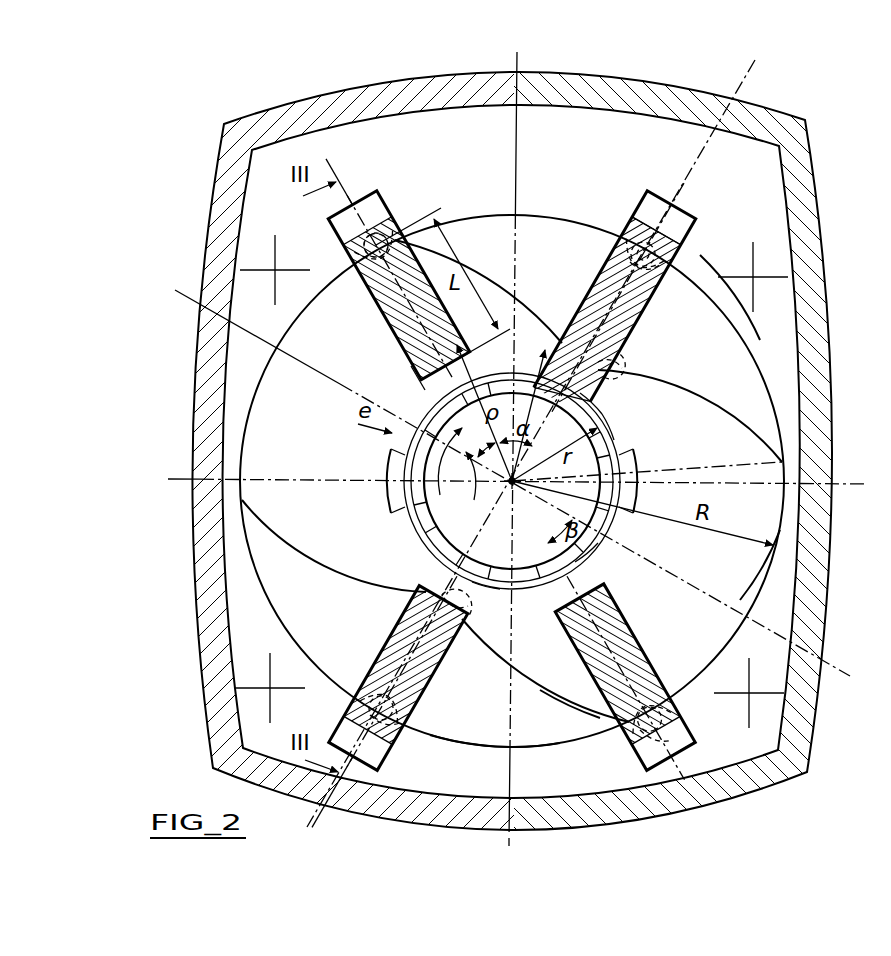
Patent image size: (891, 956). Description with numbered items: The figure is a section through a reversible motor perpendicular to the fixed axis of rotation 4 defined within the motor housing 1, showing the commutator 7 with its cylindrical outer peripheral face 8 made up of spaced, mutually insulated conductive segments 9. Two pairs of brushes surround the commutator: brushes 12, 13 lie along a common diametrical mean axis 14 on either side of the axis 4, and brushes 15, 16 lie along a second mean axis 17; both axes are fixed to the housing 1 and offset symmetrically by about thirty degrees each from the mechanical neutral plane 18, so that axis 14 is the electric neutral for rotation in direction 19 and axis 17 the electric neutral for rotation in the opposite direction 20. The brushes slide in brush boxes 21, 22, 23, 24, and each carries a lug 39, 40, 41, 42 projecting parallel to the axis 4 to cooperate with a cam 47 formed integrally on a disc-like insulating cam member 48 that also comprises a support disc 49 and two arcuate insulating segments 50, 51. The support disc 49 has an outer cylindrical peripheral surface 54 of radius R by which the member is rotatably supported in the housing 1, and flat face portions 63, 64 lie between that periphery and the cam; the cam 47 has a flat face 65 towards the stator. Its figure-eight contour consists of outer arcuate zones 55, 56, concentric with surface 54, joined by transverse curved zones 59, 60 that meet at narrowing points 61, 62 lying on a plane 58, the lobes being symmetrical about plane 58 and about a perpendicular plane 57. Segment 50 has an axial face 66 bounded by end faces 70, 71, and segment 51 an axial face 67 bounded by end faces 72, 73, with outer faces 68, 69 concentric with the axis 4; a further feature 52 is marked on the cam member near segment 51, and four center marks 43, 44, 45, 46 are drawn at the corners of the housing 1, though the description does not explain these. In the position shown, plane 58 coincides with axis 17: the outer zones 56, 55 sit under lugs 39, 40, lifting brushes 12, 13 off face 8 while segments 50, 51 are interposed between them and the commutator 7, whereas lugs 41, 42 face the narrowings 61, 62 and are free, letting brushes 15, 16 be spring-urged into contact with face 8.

The motor housing 1 is at (260, 98).
The axis of rotation 4 is at (505, 504).
The commutator 7 is at (612, 438).
The outer peripheral face 8 is at (600, 410).
The conductive segments 9 is at (618, 446).
The brush 12 is at (392, 352).
The brush 13 is at (628, 660).
The mean axis 14 is at (626, 614).
The brush 15 is at (626, 352).
The brush 16 is at (420, 668).
The mean axis 17 is at (655, 248).
The mechanical neutral plane 18 is at (516, 62).
The direction of rotation 19 is at (445, 474).
The direction of rotation 20 is at (478, 485).
The brush box 21 is at (404, 370).
The brush box 22 is at (692, 722).
The brush box 23 is at (634, 204).
The brush box 24 is at (365, 661).
The lug 39 is at (385, 234).
The lug 40 is at (672, 740).
The lug 41 is at (665, 262).
The lug 42 is at (402, 722).
The center mark 43 is at (275, 268).
The center mark 44 is at (270, 686).
The center mark 45 is at (753, 272).
The center mark 46 is at (749, 690).
The cam 47 is at (565, 697).
The cam member 48 is at (537, 752).
The support disc 49 is at (494, 750).
The insulating segment 50 is at (383, 480).
The insulating segment 51 is at (612, 560).
The ring slot 52 is at (496, 574).
The outer cylindrical peripheral surface 54 is at (735, 328).
The outer arcuate zone 55 is at (767, 584).
The outer arcuate zone 56 is at (290, 330).
The plane 57 is at (845, 665).
The plane 58 is at (745, 92).
The transverse curved zone 59 is at (497, 284).
The transverse curved zone 60 is at (498, 668).
The narrowing point 61 is at (620, 372).
The narrowing point 62 is at (466, 622).
The flat face portion 63 is at (742, 385).
The flat face portion 64 is at (460, 748).
The flat face 65 is at (312, 558).
The axial face 66 is at (418, 405).
The axial face 67 is at (641, 497).
The outer face 68 is at (386, 453).
The outer face 69 is at (640, 522).
The end face 70 is at (458, 368).
The end face 71 is at (392, 495).
The end face 72 is at (556, 592).
The end face 73 is at (652, 470).